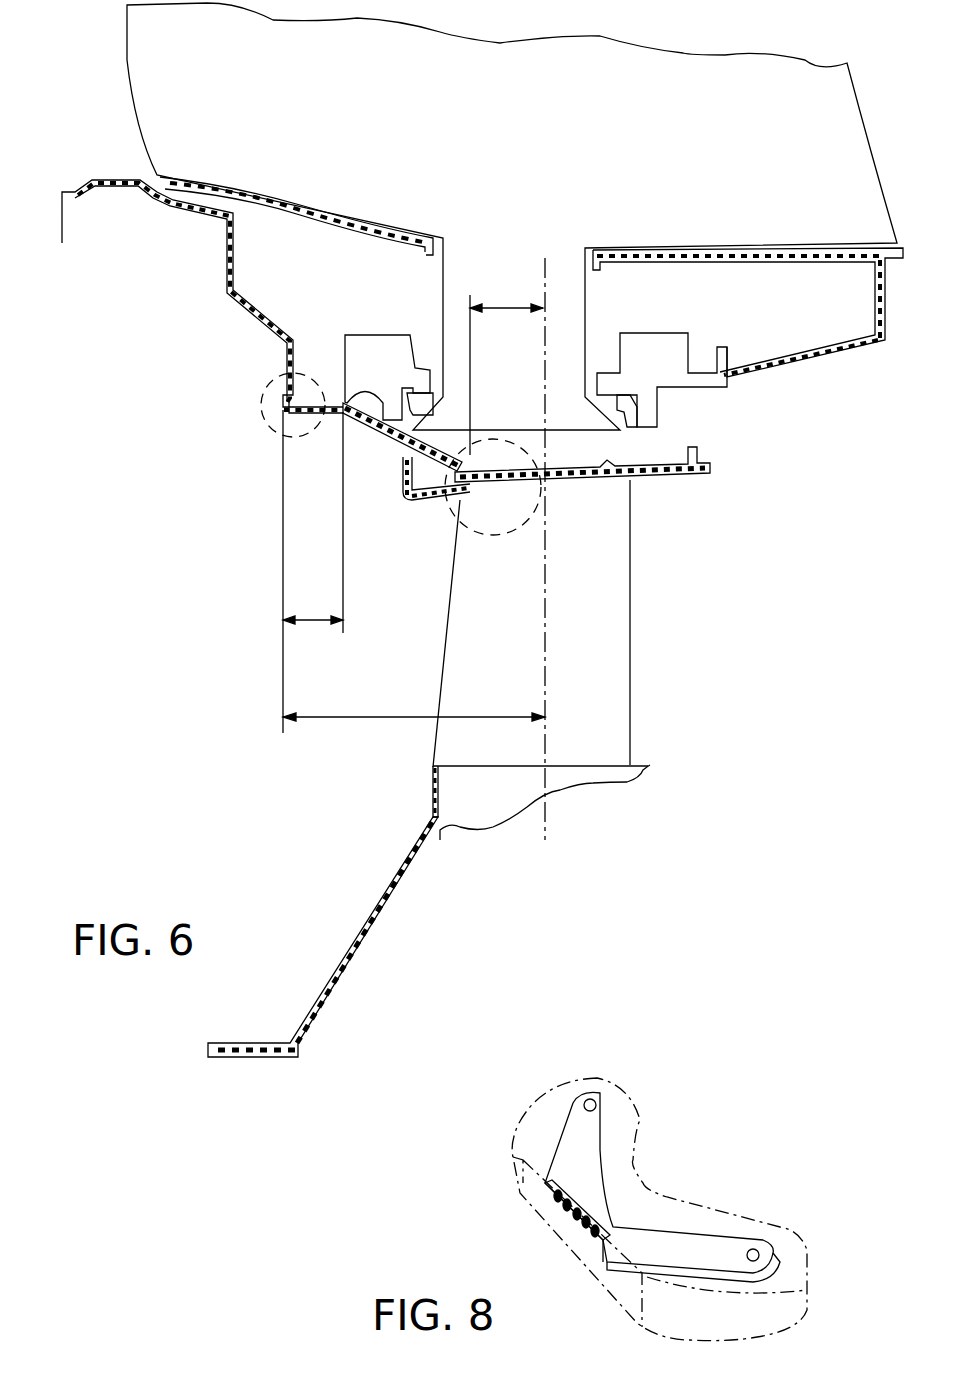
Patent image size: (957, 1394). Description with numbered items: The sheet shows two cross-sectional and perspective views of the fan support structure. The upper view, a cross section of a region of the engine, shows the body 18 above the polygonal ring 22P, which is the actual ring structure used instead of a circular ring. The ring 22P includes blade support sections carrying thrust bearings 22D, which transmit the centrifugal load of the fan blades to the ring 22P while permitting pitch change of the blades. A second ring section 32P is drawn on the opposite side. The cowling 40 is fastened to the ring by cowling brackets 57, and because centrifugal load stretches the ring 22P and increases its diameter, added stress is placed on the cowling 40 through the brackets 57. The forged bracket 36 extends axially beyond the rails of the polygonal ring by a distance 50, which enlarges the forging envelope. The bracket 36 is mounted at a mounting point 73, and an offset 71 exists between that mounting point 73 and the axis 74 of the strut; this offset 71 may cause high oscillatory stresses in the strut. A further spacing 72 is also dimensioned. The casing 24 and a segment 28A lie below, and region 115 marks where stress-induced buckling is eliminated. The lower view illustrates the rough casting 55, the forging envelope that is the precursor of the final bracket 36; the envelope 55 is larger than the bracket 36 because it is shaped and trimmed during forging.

In FIG. 6, the engine body 18 is at (528, 130).
In FIG. 6, the cowling 40 is at (137, 183).
In FIG. 6, the cowling bracket 57 is at (236, 245).
In FIG. 6, the polygonal ring 22P is at (360, 350).
In FIG. 6, the thrust bearing 22D is at (420, 397).
In FIG. 6, the proximal seal block right 32P is at (638, 348).
In FIG. 6, the offset dimension 72 is at (515, 305).
In FIG. 6, the mounting point 73 is at (255, 413).
In FIG. 6, the bracket 36 is at (358, 430).
In FIG. 8, the bracket 36 is at (695, 1235).
In FIG. 6, the region 115 is at (520, 530).
In FIG. 6, the casing 24 is at (585, 482).
In FIG. 6, the liner segment 28A is at (608, 612).
In FIG. 6, the axis of the strut 74 is at (545, 672).
In FIG. 6, the distance 50 is at (305, 622).
In FIG. 6, the offset 71 is at (383, 722).
In FIG. 8, the rough casting 55 is at (645, 1180).